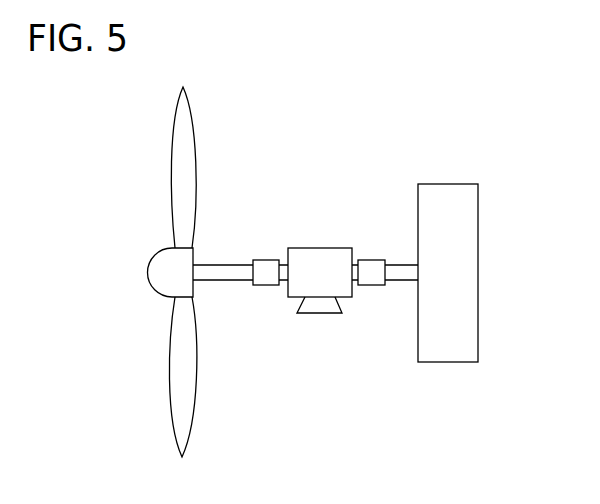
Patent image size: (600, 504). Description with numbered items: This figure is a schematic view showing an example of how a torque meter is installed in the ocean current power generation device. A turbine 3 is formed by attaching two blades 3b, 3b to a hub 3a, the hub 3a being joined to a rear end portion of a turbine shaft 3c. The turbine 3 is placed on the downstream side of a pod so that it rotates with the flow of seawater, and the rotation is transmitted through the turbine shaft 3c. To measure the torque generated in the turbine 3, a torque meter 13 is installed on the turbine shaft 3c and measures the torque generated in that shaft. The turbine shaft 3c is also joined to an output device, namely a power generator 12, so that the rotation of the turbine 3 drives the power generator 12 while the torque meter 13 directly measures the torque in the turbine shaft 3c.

The turbine 3 is at (247, 283).
The hub 3a is at (150, 262).
The blade 3b is at (177, 162).
The turbine shaft 3c is at (393, 270).
The power generator 12 is at (465, 292).
The torque meter 13 is at (344, 283).